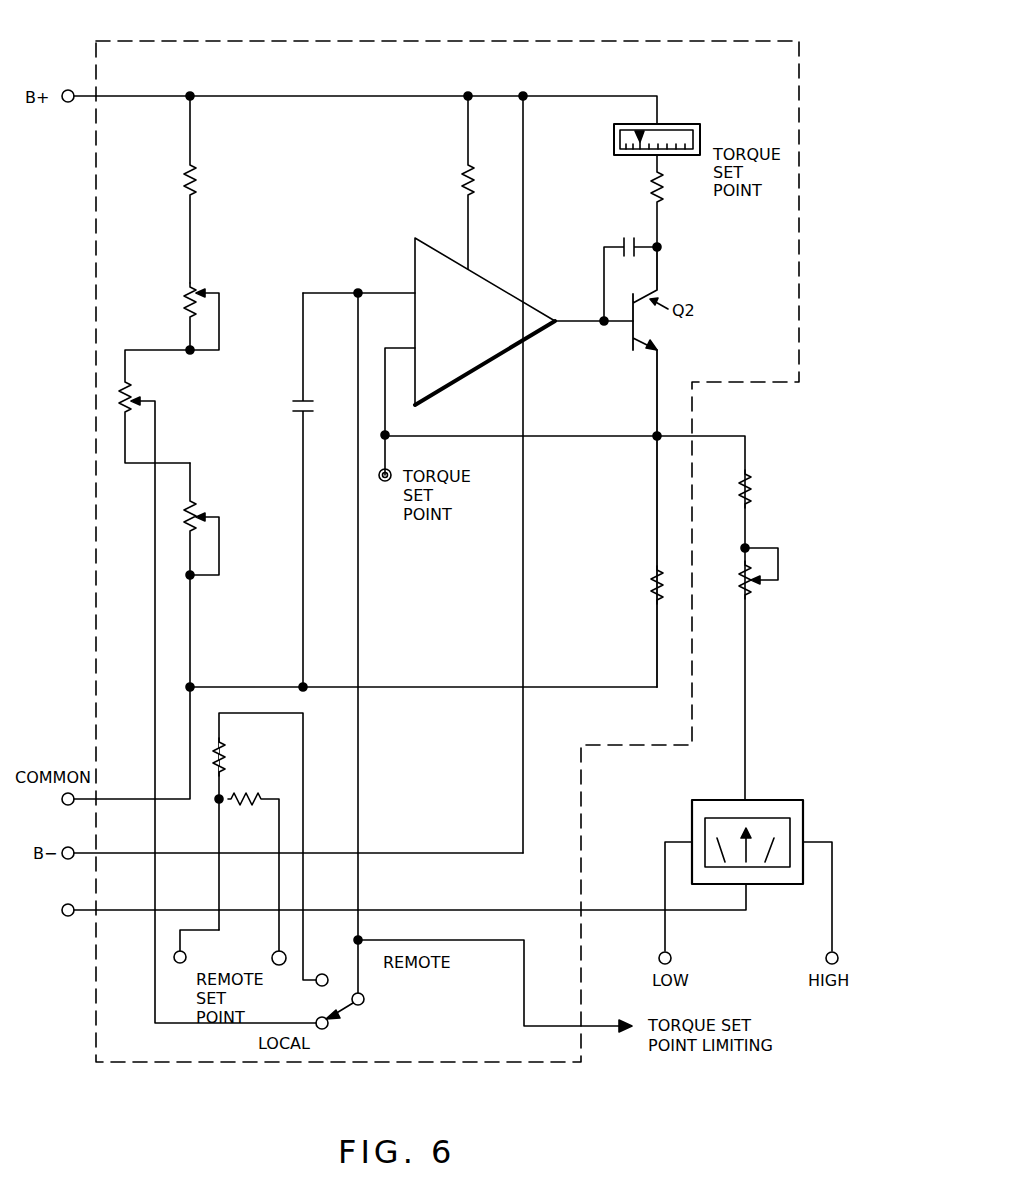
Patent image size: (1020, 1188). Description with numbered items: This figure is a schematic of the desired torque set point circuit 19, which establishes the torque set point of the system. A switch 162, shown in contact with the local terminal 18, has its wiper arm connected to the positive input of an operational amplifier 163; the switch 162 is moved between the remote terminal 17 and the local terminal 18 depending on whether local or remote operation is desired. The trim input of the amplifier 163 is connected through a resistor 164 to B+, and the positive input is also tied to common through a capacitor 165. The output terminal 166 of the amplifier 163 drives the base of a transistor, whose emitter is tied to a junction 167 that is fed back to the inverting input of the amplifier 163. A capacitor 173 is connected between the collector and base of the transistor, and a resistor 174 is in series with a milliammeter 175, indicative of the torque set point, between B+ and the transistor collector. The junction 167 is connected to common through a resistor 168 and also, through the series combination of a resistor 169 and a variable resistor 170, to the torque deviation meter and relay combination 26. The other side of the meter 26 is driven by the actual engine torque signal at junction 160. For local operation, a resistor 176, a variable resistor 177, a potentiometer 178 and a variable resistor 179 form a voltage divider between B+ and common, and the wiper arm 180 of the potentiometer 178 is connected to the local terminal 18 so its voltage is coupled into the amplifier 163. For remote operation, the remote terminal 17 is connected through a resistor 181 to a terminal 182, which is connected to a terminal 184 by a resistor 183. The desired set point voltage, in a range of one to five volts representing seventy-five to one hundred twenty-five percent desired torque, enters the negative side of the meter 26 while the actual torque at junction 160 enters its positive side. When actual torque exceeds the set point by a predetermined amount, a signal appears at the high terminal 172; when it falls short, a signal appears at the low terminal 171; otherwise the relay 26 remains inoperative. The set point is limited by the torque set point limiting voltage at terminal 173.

The desired torque set point circuit 19 is at (437, 41).
The resistor 176 is at (198, 184).
The variable resistor 177 is at (185, 292).
The potentiometer 178 is at (130, 388).
The wiper arm 180 is at (158, 402).
The variable resistor 179 is at (198, 506).
The capacitor 165 is at (292, 412).
The operational amplifier 163 is at (465, 272).
The resistor 164 is at (462, 172).
The output terminal 166 is at (562, 320).
The capacitor 173 is at (620, 246).
The resistor 174 is at (650, 186).
The milliammeter 175 is at (698, 124).
The junction 167 is at (654, 433).
The resistor 169 is at (754, 496).
The variable resistor 170 is at (749, 592).
The resistor 168 is at (651, 580).
The resistor 181 is at (223, 752).
The resistor 183 is at (246, 795).
The terminal 182 is at (185, 954).
The terminal 184 is at (277, 951).
The junction 160 is at (383, 902).
The switch 162 is at (370, 1012).
The remote terminal 17 is at (320, 987).
The local terminal 18 is at (330, 1024).
The torque deviation meter and relay combination 26 is at (793, 798).
The low output terminal 171 is at (669, 952).
The high output terminal 172 is at (824, 951).